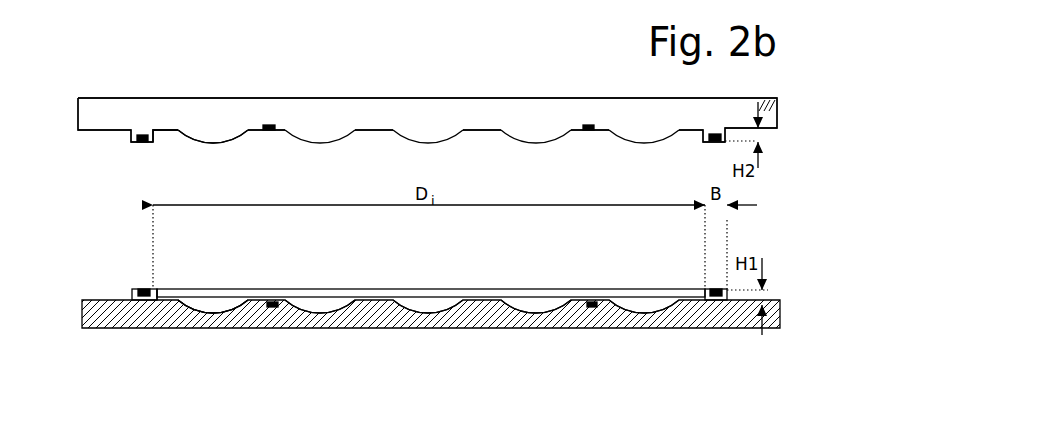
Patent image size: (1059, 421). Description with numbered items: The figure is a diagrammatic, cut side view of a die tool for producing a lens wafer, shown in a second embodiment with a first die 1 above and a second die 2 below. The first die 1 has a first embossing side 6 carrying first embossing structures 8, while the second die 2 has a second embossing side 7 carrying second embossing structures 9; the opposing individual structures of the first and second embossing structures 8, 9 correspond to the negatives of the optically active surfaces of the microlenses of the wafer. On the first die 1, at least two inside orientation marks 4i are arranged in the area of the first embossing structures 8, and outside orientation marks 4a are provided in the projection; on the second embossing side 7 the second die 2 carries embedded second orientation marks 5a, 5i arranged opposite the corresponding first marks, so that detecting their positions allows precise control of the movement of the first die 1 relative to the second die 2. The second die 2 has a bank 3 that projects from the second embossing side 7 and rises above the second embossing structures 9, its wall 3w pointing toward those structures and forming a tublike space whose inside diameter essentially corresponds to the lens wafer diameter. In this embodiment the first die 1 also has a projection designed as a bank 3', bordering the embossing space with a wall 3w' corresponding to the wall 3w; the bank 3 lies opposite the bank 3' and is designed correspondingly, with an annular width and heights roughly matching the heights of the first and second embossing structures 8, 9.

The first die 1 is at (143, 65).
The second die 2 is at (587, 378).
The bank 3 is at (382, 279).
The bank 3' is at (410, 120).
The wall 3w is at (116, 263).
The wall 3w' is at (213, 98).
The outside orientation marks 4a is at (145, 134).
The inside orientation marks 4i is at (586, 126).
The second orientation mark 5a is at (145, 300).
The second orientation mark 5i is at (593, 303).
The first embossing side 6 is at (380, 129).
The second embossing side 7 is at (264, 302).
The first embossing structures 8 is at (213, 143).
The second embossing structures 9 is at (213, 313).